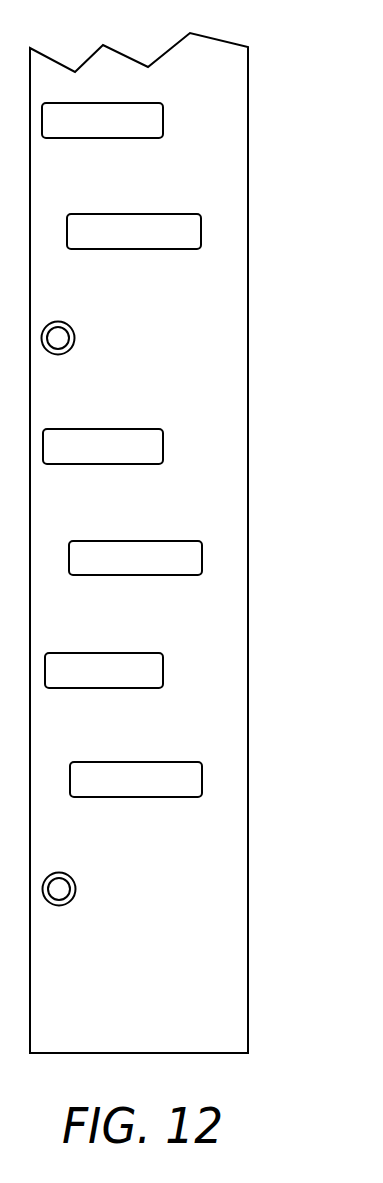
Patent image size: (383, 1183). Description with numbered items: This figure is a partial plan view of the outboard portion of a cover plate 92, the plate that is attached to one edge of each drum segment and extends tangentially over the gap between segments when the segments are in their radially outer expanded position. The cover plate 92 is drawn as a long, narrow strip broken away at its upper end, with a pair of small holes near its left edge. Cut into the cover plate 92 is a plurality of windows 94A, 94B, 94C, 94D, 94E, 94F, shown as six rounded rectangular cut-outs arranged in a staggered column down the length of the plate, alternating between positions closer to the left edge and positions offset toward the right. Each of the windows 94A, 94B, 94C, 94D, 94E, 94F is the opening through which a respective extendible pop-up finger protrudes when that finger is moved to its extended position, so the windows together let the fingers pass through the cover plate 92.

The cover plate 92 is at (223, 333).
The window 94A is at (172, 784).
The window 94B is at (172, 560).
The window 94C is at (147, 235).
The window 94D is at (147, 673).
The window 94E is at (147, 447).
The window 94F is at (148, 122).